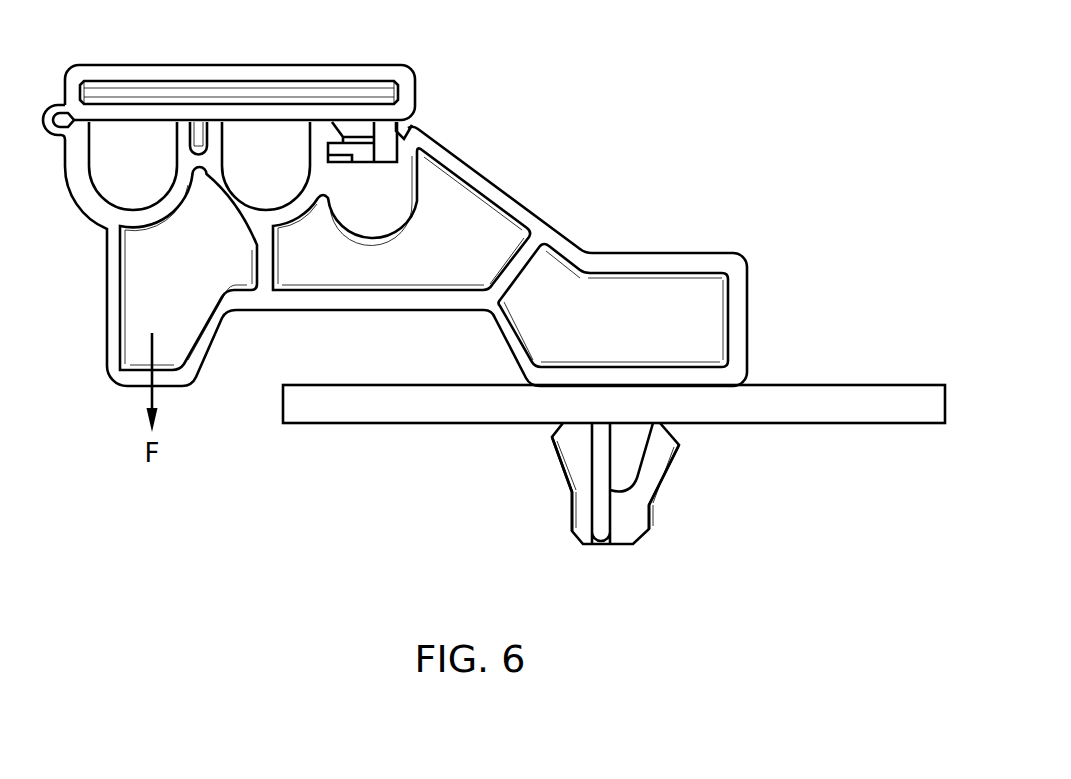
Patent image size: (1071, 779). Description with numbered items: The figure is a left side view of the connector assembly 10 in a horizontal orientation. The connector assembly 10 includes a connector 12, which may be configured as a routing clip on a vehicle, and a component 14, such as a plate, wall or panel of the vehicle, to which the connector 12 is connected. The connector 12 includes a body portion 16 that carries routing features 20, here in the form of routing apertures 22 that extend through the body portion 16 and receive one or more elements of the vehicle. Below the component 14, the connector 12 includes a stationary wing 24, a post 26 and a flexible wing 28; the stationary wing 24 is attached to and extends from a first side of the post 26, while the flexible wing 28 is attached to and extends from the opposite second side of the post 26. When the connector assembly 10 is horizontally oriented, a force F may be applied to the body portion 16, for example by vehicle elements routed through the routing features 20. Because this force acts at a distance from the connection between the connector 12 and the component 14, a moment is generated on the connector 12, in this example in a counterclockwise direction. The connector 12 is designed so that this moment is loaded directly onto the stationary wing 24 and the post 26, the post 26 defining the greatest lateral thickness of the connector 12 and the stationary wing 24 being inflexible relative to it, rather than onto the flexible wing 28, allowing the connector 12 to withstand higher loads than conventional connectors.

The connector assembly 10 is at (699, 119).
The connector 12 is at (641, 516).
The component 14 is at (870, 414).
The body portion 16 is at (540, 206).
The routing features 20 is at (117, 144).
The routing apertures 22 is at (158, 144).
The stationary wing 24 is at (545, 467).
The post 26 is at (600, 539).
The flexible wing 28 is at (687, 464).